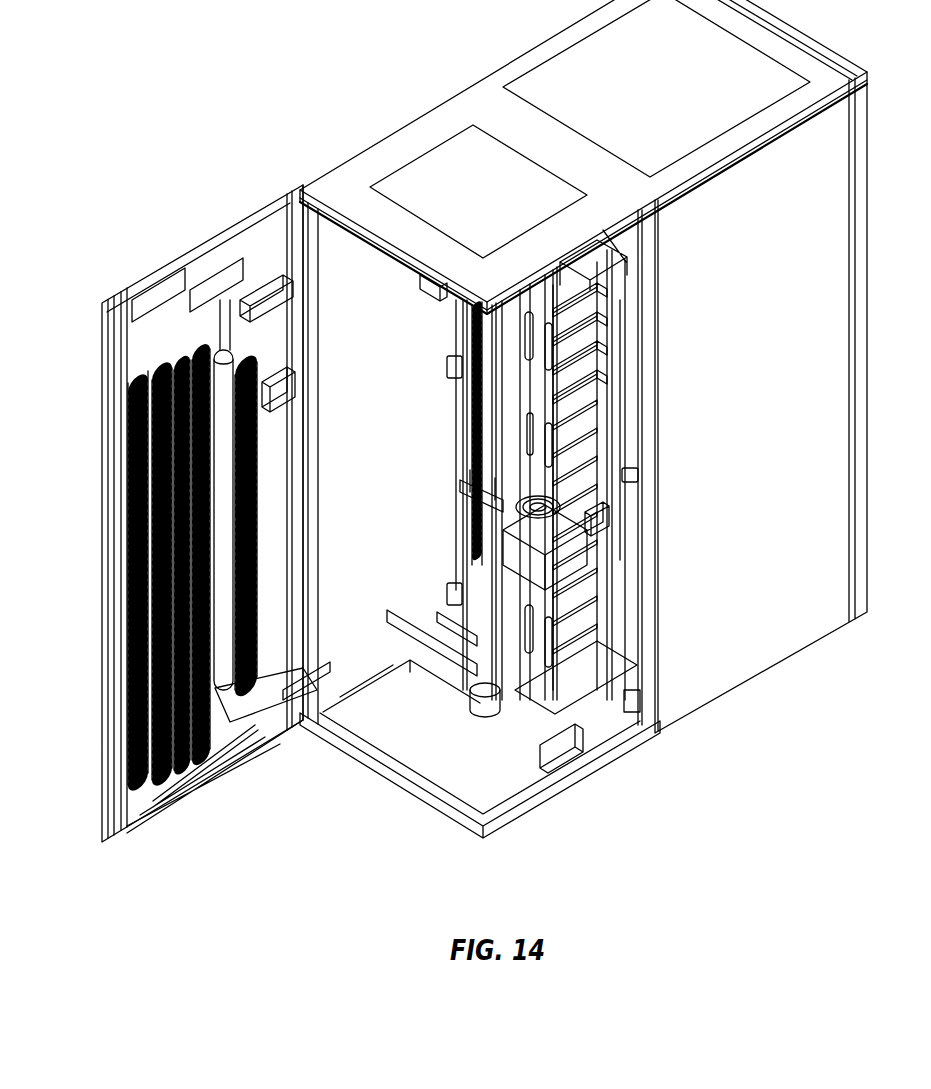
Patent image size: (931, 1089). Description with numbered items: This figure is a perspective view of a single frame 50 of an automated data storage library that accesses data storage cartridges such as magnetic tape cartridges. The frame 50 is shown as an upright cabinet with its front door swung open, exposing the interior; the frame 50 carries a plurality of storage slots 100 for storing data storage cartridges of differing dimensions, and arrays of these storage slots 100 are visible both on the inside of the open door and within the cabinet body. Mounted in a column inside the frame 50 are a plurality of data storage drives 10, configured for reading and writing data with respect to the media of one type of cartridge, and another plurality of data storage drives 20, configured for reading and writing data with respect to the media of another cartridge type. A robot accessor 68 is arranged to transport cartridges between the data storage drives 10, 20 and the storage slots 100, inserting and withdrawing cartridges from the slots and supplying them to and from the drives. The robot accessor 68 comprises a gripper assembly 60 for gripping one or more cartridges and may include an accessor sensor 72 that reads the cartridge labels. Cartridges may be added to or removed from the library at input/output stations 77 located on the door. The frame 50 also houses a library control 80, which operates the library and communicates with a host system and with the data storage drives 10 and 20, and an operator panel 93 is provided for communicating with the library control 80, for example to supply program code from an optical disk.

The data storage drives 10 is at (607, 325).
The data storage drives 20 is at (607, 388).
The frame 50 is at (387, 843).
The gripper assembly 60 is at (600, 520).
The robot accessor 68 is at (513, 727).
The accessor sensor 72 is at (495, 555).
The input/output stations 77 is at (130, 383).
The library control 80 is at (280, 390).
The operator panel 93 is at (272, 308).
The storage slots 100 is at (125, 655).